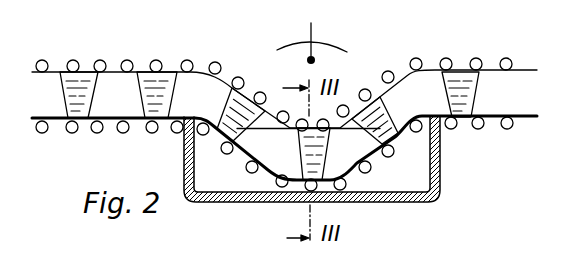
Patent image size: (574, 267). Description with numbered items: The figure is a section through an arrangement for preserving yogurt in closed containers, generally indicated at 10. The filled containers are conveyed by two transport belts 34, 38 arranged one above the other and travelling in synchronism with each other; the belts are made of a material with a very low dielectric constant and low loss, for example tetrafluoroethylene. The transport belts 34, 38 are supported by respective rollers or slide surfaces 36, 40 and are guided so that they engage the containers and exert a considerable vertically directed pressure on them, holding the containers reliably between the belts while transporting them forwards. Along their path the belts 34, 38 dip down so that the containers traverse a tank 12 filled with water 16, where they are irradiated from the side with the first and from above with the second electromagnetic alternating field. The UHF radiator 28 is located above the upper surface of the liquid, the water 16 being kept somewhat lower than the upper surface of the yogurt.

The conveyor belt 10 is at (288, 100).
The tank 12 is at (317, 176).
The water 16 is at (423, 173).
The UHF radiator 28 is at (340, 48).
The transport belt 34 is at (486, 119).
The rollers or slide surfaces 36 is at (97, 133).
The transport belt 38 is at (517, 68).
The rollers or slide surfaces 40 is at (128, 62).